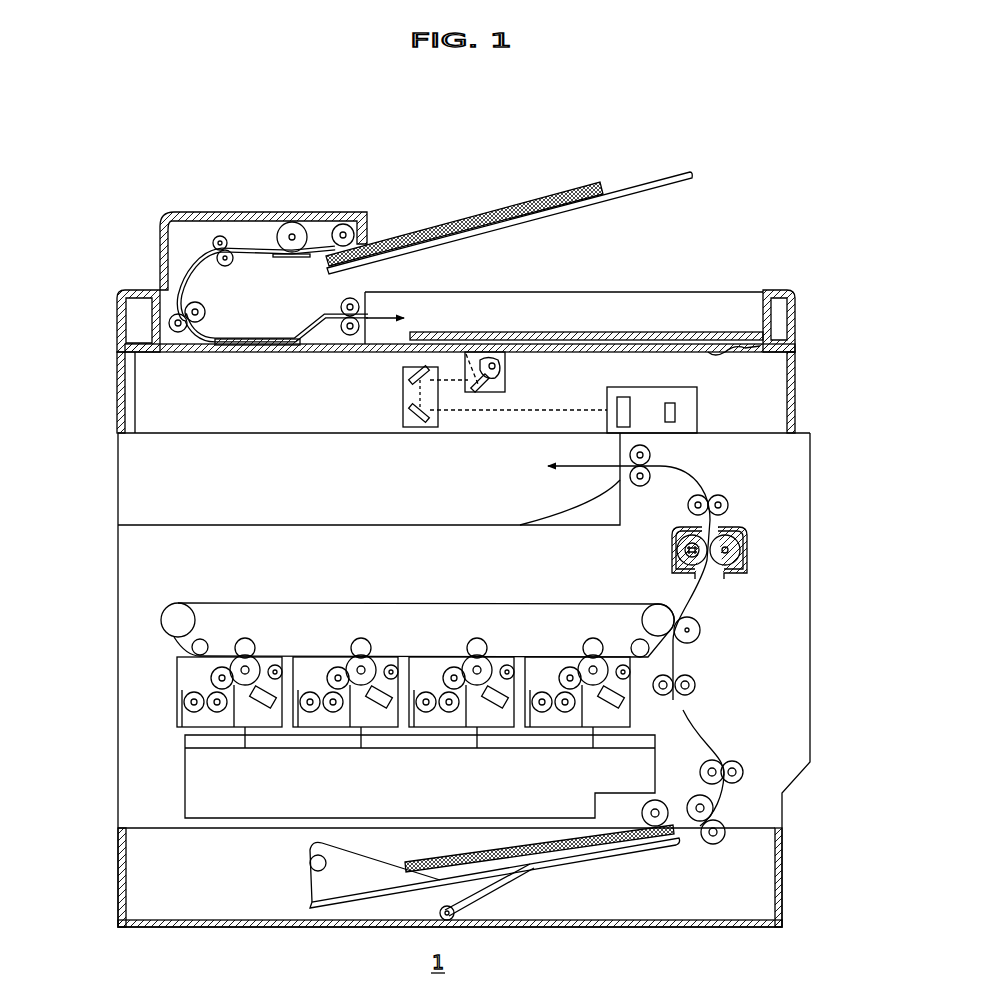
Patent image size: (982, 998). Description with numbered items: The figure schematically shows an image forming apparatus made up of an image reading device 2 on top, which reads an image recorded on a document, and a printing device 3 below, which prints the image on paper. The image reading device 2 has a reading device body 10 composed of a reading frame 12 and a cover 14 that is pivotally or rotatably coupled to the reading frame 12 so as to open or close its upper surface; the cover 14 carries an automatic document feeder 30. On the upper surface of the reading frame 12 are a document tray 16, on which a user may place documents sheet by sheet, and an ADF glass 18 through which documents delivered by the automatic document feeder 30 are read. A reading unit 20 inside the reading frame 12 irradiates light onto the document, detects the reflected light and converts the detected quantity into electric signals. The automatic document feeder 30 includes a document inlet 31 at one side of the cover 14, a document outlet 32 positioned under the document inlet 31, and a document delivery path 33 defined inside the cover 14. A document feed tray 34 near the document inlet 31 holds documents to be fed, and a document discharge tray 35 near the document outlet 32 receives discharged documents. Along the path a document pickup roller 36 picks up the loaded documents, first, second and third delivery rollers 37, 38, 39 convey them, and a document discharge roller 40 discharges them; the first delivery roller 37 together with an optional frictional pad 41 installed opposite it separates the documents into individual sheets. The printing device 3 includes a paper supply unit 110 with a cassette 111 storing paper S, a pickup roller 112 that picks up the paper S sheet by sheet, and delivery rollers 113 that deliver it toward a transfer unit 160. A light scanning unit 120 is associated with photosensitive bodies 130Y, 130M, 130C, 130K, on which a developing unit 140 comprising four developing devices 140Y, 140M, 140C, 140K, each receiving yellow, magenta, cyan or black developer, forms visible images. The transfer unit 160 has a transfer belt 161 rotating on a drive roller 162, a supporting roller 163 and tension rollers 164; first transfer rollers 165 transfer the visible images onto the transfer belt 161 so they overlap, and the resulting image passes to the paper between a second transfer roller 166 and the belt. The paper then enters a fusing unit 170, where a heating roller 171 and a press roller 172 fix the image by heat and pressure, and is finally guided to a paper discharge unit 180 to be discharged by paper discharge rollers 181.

The image reading device 2 is at (807, 190).
The printing device 3 is at (820, 465).
The reading device body 10 is at (48, 472).
The reading frame 12 is at (117, 461).
The cover 14 is at (117, 384).
The document tray 16 is at (656, 343).
The ADF glass 18 is at (237, 352).
The reading unit 20 is at (394, 388).
The automatic document feeder 30 is at (369, 200).
The document inlet 31 is at (363, 240).
The document outlet 32 is at (408, 320).
The document delivery path 33 is at (248, 215).
The document feed tray 34 is at (632, 180).
The document discharge tray 35 is at (605, 330).
The document pickup roller 36 is at (343, 224).
The first delivery roller 37 is at (292, 222).
The second delivery roller 38 is at (218, 236).
The third delivery roller 39 is at (205, 311).
The document discharge roller 40 is at (360, 300).
The frictional pad 41 is at (292, 258).
The paper supply unit 110 is at (798, 888).
The cassette 111 is at (155, 925).
The pickup roller 112 is at (660, 828).
The delivery rollers 113 is at (725, 845).
The light scanning unit 120 is at (198, 792).
The photosensitive body (black) 130K is at (247, 658).
The photosensitive body (cyan) 130C is at (363, 658).
The photosensitive body (magenta) 130M is at (479, 658).
The photosensitive body (yellow) 130Y is at (595, 658).
The developing unit 140 is at (168, 697).
The developing device (black) 140K is at (274, 655).
The developing device (cyan) 140C is at (390, 655).
The developing device (magenta) 140M is at (506, 655).
The developing device (yellow) 140Y is at (622, 655).
The transfer unit 160 is at (155, 572).
The transfer belt 161 is at (190, 648).
The drive roller 162 is at (165, 612).
The supporting roller 163 is at (672, 616).
The tension rollers 164 is at (196, 652).
The first transfer rollers 165 is at (603, 654).
The second transfer roller 166 is at (701, 631).
The fusing unit 170 is at (758, 542).
The heating roller 171 is at (682, 540).
The press roller 172 is at (722, 510).
The paper discharge unit 180 is at (655, 455).
The paper discharge rollers 181 is at (630, 452).
The paper S is at (445, 865).